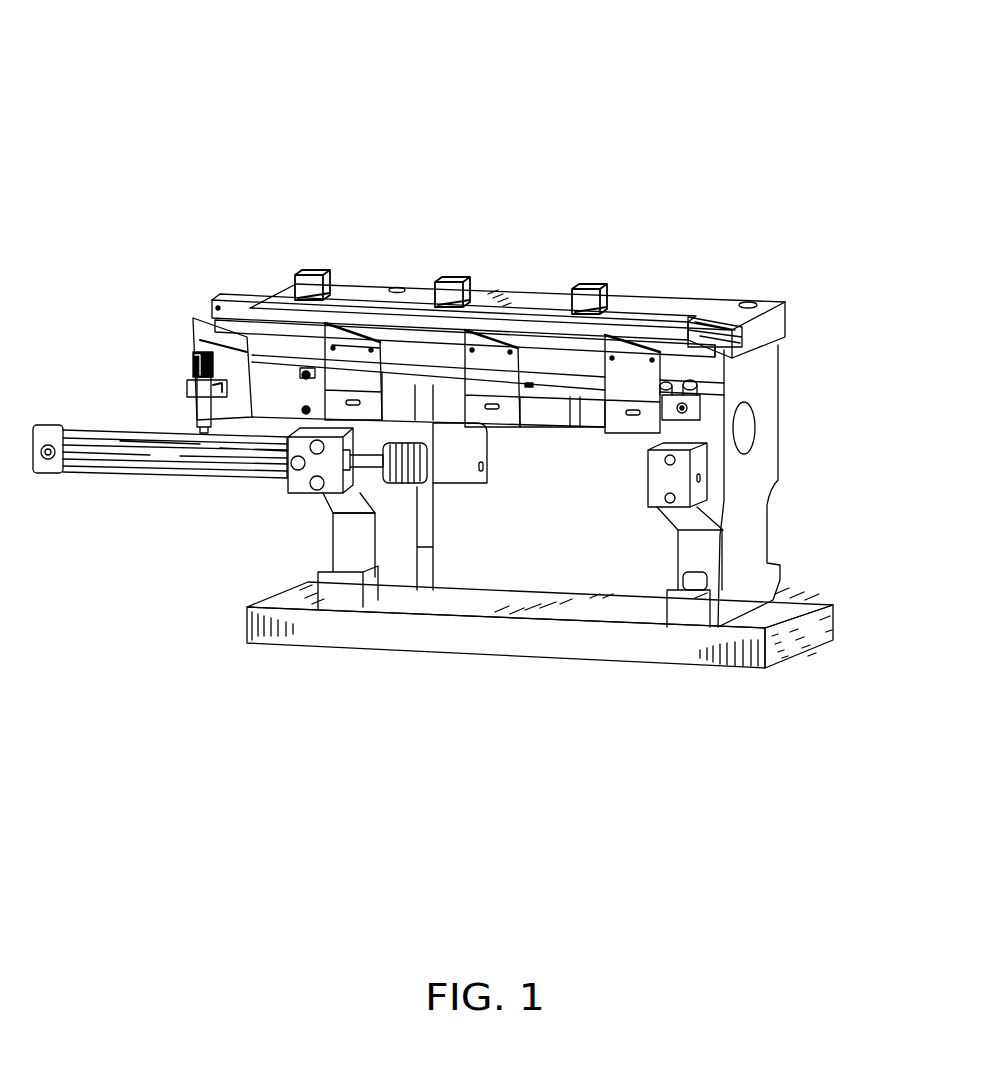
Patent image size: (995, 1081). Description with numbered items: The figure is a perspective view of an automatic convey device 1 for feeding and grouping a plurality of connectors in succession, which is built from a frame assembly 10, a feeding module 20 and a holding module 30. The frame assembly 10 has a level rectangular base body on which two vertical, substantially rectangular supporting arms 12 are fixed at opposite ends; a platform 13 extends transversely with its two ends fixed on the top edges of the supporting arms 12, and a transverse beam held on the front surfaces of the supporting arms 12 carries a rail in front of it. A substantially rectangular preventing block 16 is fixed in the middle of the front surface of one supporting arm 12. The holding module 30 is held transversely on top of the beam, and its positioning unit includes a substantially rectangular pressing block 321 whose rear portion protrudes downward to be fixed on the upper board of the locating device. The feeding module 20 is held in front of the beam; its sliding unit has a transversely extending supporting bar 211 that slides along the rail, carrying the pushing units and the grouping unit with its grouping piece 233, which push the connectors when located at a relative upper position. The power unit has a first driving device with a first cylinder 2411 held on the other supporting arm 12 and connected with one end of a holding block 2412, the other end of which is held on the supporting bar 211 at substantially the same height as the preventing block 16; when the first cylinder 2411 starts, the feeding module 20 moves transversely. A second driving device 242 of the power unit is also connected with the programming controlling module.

The automatic convey device 1 is at (233, 44).
The frame assembly 10 is at (325, 598).
The supporting arm 12 is at (750, 503).
The platform 13 is at (690, 300).
The preventing block 16 is at (657, 487).
The feeding module 20 is at (633, 382).
The holding module 30 is at (247, 300).
The pressing block 321 is at (454, 283).
The supporting bar 211 is at (563, 418).
The grouping piece 233 is at (200, 342).
The second driving device 242 is at (193, 393).
The first cylinder 2411 is at (153, 457).
The holding block 2412 is at (453, 472).